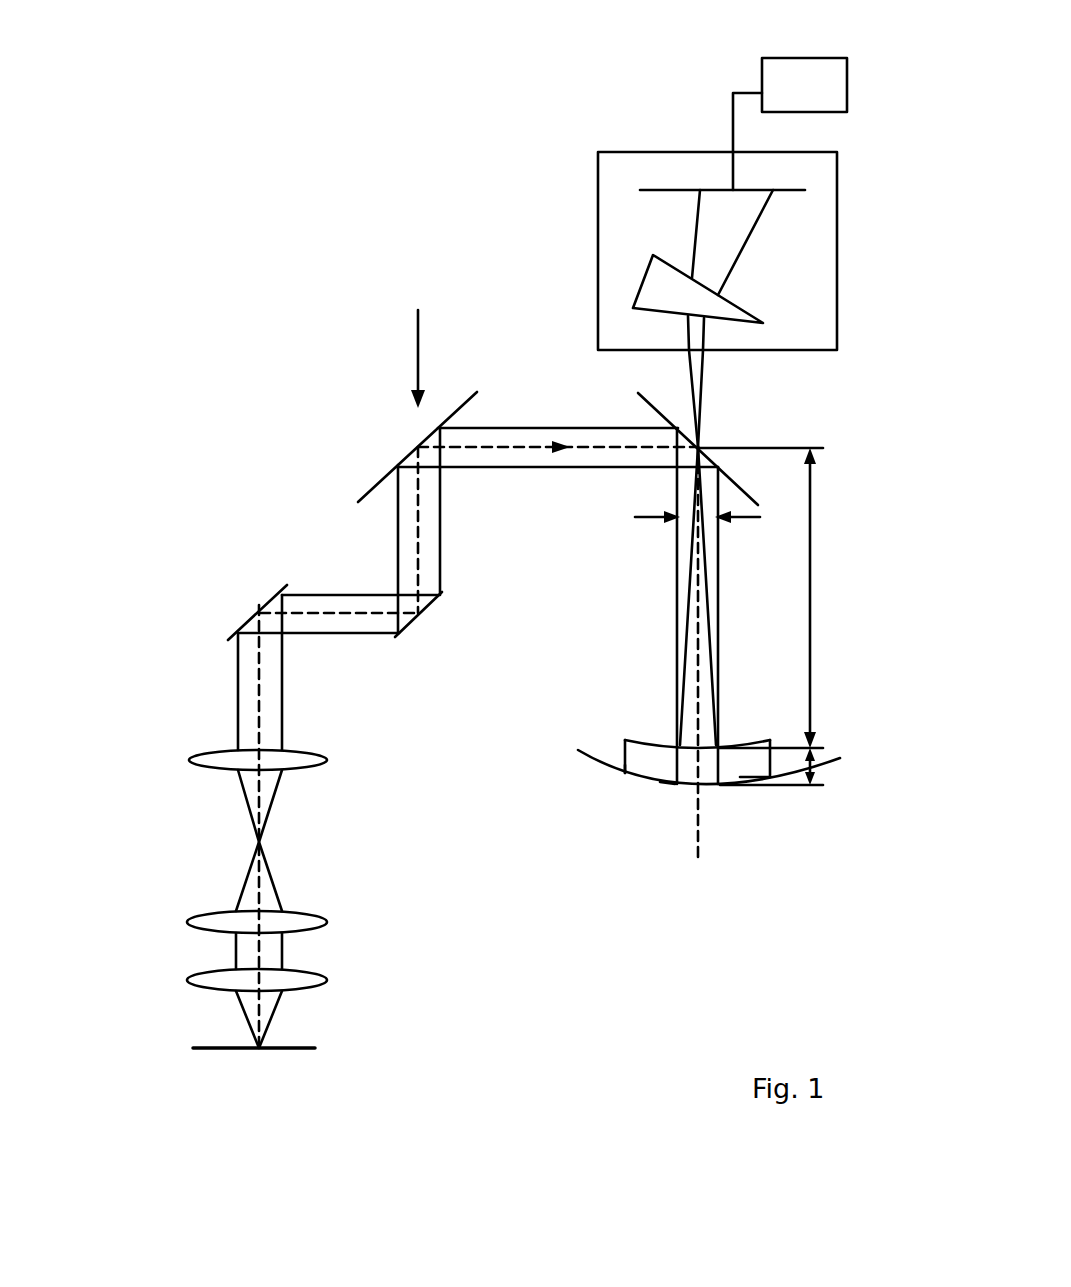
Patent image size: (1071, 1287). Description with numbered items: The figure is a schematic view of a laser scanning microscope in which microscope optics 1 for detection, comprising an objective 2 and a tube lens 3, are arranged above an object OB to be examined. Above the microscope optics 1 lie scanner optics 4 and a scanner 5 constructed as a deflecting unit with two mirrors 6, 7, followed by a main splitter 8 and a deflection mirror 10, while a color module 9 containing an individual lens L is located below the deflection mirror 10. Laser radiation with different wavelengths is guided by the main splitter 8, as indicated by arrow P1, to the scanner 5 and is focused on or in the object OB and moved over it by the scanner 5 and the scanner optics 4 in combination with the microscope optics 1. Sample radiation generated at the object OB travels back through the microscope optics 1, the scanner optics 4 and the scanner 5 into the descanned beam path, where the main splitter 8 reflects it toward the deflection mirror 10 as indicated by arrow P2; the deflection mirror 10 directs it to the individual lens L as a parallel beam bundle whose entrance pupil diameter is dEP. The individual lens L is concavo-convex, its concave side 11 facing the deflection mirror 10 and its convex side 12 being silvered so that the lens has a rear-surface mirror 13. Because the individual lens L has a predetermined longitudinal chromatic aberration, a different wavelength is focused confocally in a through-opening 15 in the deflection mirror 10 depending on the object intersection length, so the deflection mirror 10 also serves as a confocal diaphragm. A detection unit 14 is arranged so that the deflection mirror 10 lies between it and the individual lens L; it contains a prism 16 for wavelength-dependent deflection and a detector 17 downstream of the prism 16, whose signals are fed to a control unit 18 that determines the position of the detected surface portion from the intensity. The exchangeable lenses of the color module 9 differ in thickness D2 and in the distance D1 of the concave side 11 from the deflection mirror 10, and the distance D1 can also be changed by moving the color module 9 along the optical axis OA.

The microscope optics 1 is at (343, 947).
The objective 2 is at (200, 972).
The tube lens 3 is at (200, 915).
The scanner optics 4 is at (200, 752).
The scanner 5 is at (216, 586).
The mirror 6 is at (235, 632).
The mirror 7 is at (430, 602).
The main splitter 8 is at (382, 482).
The color module 9 is at (745, 803).
The deflection mirror 10 is at (640, 400).
The concave side 11 is at (640, 738).
The convex side 12 is at (637, 780).
The rear-surface mirror 13 is at (667, 787).
The detection unit 14 is at (598, 240).
The through-opening 15 is at (702, 443).
The prism 16 is at (633, 298).
The detector 17 is at (647, 186).
The control unit 18 is at (762, 68).
The arrow P1 is at (417, 360).
The arrow P2 is at (510, 450).
The diameter of the entrance pupil dEP is at (685, 520).
The distance D1 is at (810, 565).
The thickness D2 is at (810, 767).
The individual lens L is at (697, 757).
The optical axis OA is at (693, 855).
The object OB is at (205, 1053).